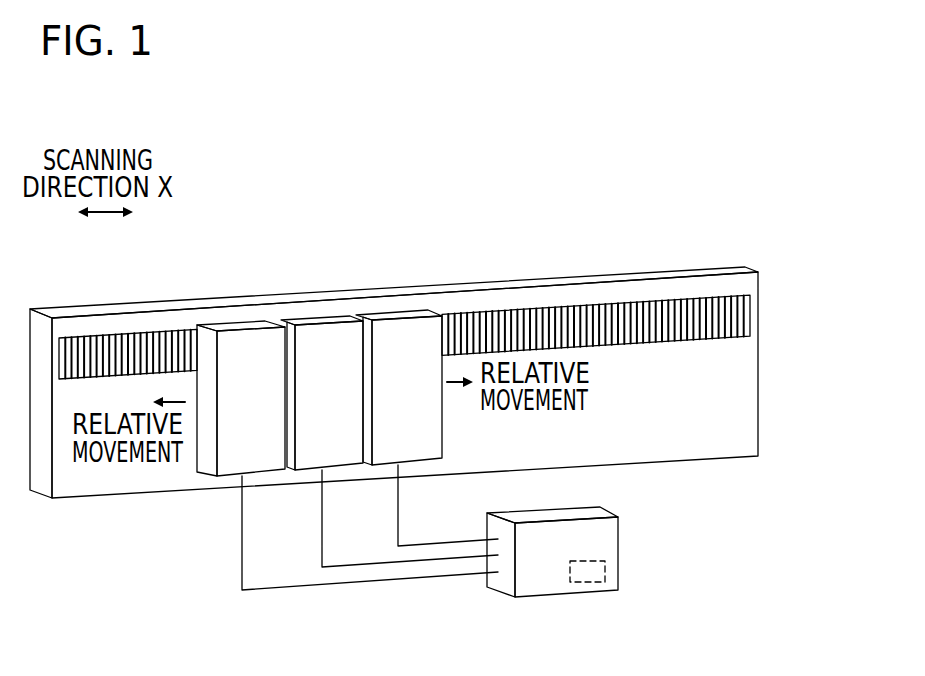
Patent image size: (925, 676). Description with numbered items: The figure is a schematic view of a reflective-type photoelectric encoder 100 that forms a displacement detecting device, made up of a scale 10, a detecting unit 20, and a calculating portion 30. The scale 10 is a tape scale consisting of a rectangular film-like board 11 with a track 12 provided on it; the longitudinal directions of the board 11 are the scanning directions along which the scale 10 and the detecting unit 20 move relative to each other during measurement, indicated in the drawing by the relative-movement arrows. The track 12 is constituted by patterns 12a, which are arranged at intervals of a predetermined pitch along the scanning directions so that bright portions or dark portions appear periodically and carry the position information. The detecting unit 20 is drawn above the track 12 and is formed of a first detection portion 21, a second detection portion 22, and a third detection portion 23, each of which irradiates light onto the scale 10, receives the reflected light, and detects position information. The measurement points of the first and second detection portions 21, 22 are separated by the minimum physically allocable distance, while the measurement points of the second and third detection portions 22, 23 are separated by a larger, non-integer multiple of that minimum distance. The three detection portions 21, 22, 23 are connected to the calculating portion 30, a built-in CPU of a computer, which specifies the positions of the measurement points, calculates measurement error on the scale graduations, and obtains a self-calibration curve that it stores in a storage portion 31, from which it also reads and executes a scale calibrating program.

The photoelectric encoder 100 is at (425, 172).
The scale 10 is at (248, 260).
The board 11 is at (517, 285).
The track 12 is at (752, 317).
The patterns 12a is at (735, 297).
The detecting unit 20 is at (390, 312).
The first detection portion 21 is at (260, 443).
The second detection portion 22 is at (342, 443).
The third detection portion 23 is at (418, 445).
The calculating portion 30 is at (613, 550).
The storage portion 31 is at (585, 582).